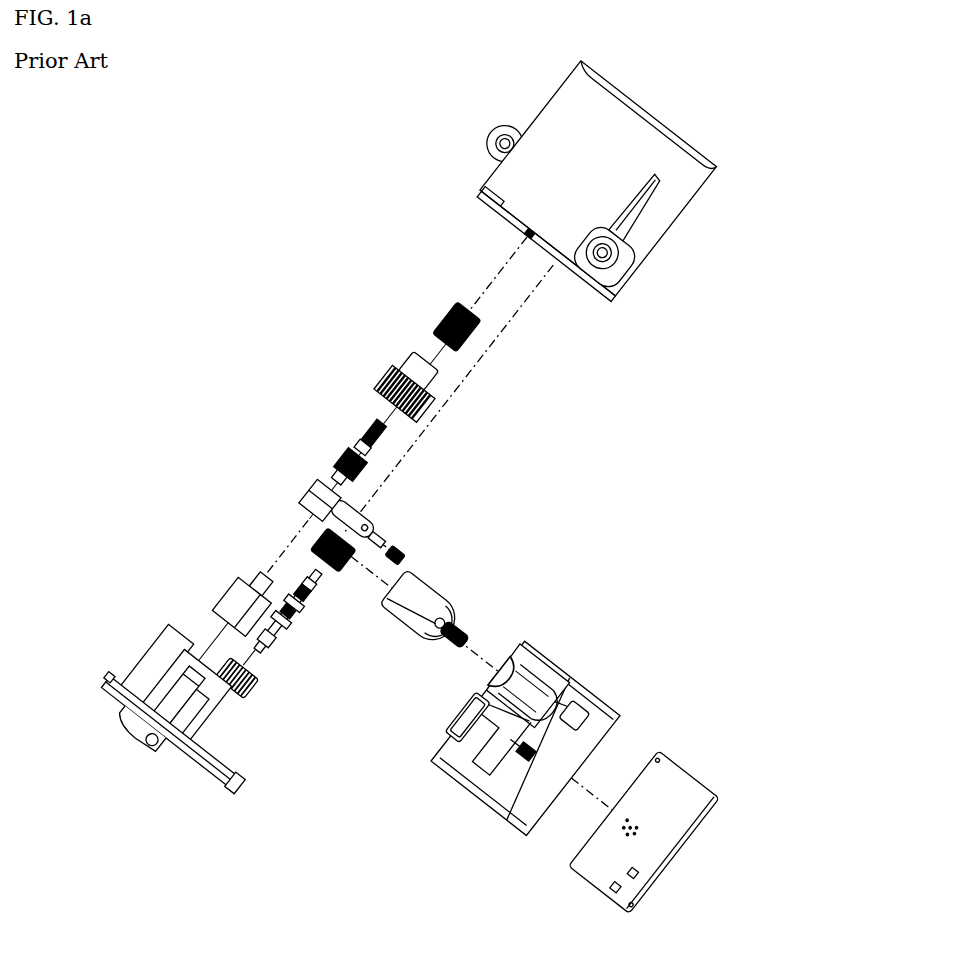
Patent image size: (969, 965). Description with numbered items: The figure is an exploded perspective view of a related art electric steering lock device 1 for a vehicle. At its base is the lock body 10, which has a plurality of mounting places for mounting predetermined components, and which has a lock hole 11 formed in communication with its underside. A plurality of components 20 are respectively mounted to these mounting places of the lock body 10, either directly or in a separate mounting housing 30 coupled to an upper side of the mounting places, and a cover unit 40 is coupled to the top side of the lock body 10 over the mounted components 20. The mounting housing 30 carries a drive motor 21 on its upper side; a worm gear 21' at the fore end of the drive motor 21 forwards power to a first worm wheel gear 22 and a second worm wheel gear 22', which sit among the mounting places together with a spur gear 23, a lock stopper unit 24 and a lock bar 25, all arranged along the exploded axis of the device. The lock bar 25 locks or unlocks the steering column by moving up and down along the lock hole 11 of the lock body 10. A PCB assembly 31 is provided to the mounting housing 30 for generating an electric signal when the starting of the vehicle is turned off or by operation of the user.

The electric steering lock device 1 is at (578, 500).
The lock body 10 is at (237, 790).
The lock hole 11 is at (157, 757).
The components 20 is at (449, 286).
The drive motor 21 is at (422, 592).
The worm 21' is at (431, 590).
The first worm wheel gear 22 is at (298, 594).
The second worm wheel gear 22' is at (260, 693).
The spur gear 23 is at (427, 381).
The lock stopper unit 24 is at (327, 520).
The lock bar 25 is at (240, 603).
The mounting housing 30 is at (447, 763).
The PCB assembly 31 is at (695, 812).
The cover unit 40 is at (660, 214).